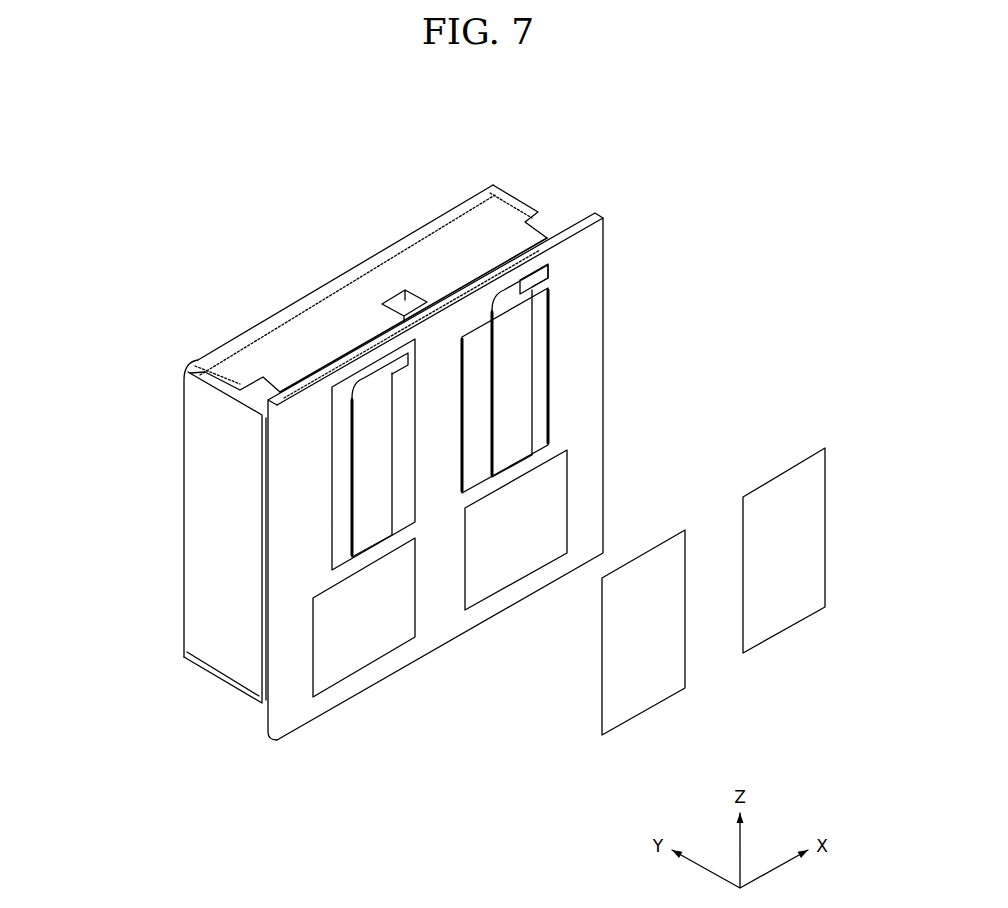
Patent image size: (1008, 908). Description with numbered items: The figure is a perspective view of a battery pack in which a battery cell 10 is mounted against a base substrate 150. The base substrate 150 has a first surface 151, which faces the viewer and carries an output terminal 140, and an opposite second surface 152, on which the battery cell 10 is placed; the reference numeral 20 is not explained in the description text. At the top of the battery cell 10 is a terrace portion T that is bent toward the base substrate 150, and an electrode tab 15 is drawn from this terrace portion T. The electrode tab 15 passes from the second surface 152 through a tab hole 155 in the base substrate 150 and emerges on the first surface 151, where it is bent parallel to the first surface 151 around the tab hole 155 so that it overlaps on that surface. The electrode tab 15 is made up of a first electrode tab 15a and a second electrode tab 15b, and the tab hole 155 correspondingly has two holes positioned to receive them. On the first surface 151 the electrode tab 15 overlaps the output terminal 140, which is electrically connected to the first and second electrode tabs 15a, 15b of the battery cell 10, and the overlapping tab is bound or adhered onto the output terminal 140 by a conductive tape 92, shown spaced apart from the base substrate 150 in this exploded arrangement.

The battery cell 10 is at (160, 580).
The cell case 20 is at (223, 388).
The terrace portion T is at (503, 217).
The electrode tab 15 is at (524, 417).
The first electrode tab 15a is at (515, 345).
The second electrode tab 15b is at (367, 437).
The tab hole 155 is at (548, 268).
The output terminal 140 is at (555, 500).
The base substrate 150 is at (405, 516).
The first surface 151 is at (287, 717).
The second surface 152 is at (267, 717).
The conductive tape 92 is at (783, 617).